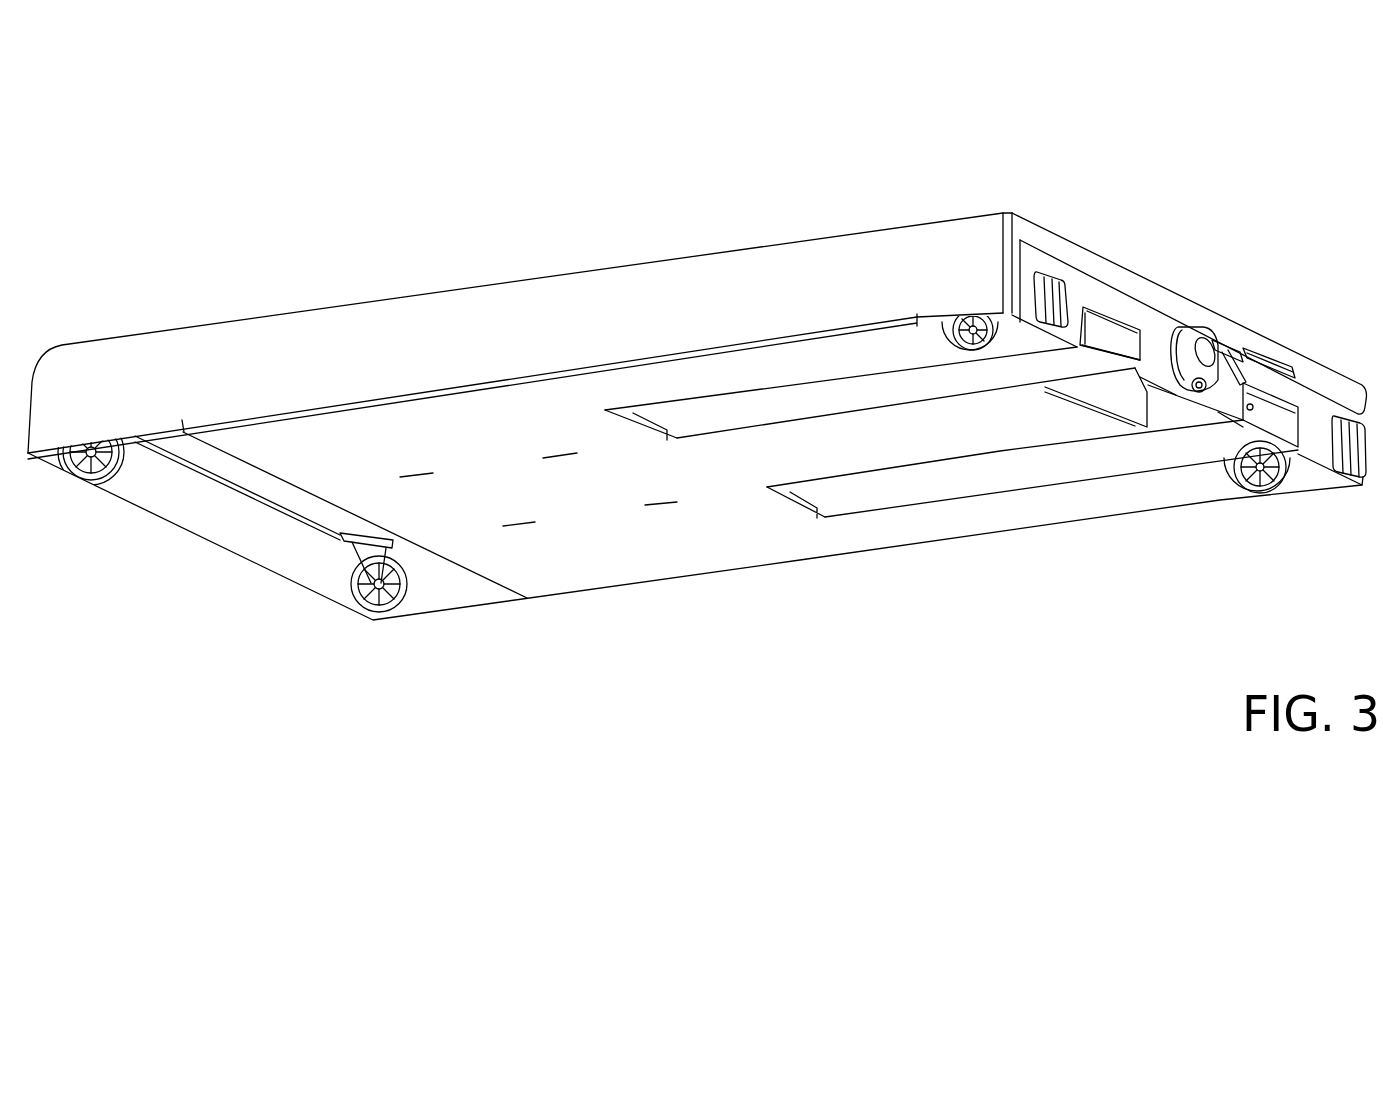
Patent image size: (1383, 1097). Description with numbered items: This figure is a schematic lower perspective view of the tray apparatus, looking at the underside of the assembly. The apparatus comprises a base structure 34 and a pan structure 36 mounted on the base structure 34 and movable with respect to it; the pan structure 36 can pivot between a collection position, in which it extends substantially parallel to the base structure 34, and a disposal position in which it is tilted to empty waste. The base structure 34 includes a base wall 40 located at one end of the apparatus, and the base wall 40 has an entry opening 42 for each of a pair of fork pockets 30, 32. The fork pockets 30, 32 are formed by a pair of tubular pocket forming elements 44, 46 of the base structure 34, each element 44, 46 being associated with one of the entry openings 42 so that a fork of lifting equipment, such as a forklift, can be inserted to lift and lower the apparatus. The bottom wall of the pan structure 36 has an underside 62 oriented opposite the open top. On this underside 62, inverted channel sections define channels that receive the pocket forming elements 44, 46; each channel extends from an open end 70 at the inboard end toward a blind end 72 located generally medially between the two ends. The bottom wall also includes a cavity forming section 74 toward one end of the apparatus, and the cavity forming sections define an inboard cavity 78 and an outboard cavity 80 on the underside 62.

The fork pocket 30 is at (1092, 310).
The fork pocket 32 is at (1262, 392).
The base structure 34 is at (1308, 522).
The pan structure 36 is at (436, 255).
The base wall 40 is at (1146, 320).
The entry opening 42 is at (1112, 317).
The pocket forming element 44 is at (722, 413).
The pocket forming element 46 is at (905, 492).
The underside 62 is at (621, 578).
The open end 70 is at (1134, 419).
The blind end 72 is at (800, 503).
The cavity forming section 74 is at (282, 492).
The inboard cavity 78 is at (222, 530).
The outboard cavity 80 is at (1095, 399).